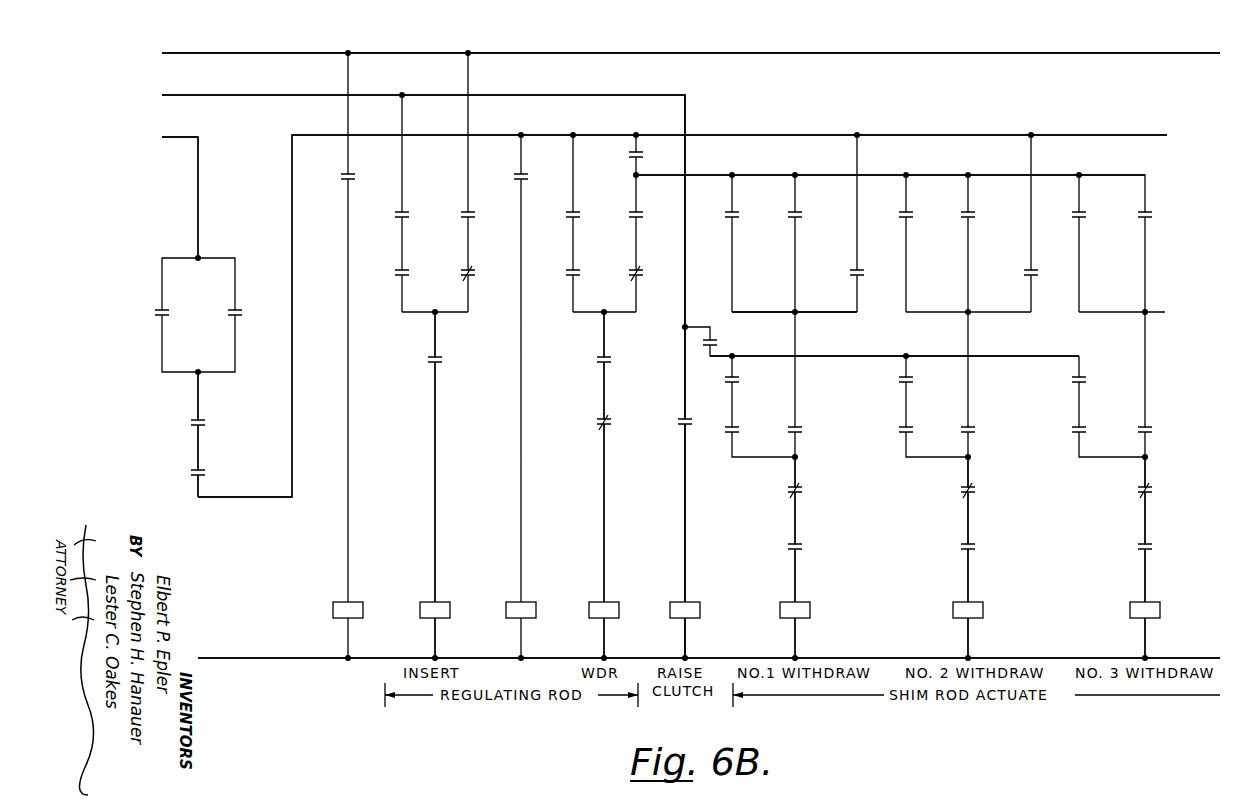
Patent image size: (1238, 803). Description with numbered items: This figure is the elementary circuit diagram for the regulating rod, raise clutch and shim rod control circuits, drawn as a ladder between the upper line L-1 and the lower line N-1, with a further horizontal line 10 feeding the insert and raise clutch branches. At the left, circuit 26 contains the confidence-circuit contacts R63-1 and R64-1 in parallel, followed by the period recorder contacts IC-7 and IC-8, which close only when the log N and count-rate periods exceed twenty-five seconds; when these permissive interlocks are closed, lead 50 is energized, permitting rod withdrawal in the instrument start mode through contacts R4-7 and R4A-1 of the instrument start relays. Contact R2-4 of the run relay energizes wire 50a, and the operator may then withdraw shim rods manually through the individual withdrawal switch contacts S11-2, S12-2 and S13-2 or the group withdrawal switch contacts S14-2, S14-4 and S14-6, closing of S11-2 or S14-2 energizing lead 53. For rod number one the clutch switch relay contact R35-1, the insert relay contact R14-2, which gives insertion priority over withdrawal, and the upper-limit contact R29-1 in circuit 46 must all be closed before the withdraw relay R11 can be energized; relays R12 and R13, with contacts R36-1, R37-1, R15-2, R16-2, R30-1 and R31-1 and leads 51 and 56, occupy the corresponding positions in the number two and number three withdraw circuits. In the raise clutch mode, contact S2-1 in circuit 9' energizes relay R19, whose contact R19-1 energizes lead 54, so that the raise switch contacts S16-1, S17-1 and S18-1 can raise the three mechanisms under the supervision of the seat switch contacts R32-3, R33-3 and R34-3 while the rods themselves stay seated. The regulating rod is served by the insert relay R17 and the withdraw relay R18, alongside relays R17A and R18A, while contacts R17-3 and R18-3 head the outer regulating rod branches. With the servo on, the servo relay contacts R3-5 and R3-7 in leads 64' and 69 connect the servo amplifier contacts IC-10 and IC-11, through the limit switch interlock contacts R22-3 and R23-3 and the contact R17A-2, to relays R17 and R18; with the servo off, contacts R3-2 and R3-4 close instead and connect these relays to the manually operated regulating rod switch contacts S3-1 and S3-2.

The power supply line L-1 is at (734, 53).
The neutral line N-1 is at (248, 658).
The period recorder 10 is at (238, 95).
The circuit 26 is at (165, 137).
The lead 50 is at (292, 198).
The wire 50a is at (772, 175).
The lead 53 is at (812, 313).
The lead 54 is at (862, 356).
The lead 64' is at (455, 485).
The lead 69 is at (604, 460).
The circuit 9' is at (698, 376).
The circuit 46 is at (795, 574).
The conductor 51 is at (968, 574).
The conductor 56 is at (1145, 574).
The relay contact R17-3 is at (370, 168).
The servo amplifier contact IC-10 is at (422, 206).
The regulating rod switch contact S3-1 is at (485, 206).
The servo relay contact R3-5 is at (420, 264).
The servo relay contact R3-2 is at (486, 267).
The relay contact R18-3 is at (543, 168).
The servo amplifier contact IC-11 is at (593, 206).
The regulating rod switch contact S3-2 is at (653, 206).
The servo relay contact R3-7 is at (591, 264).
The servo relay contact R3-4 is at (654, 267).
The run relay contact R2-4 is at (629, 158).
The individual withdrawal switch contact S11-2 is at (754, 206).
The group withdrawal switch contact S14-2 is at (817, 206).
The instrument start relay contact R4-7 is at (836, 263).
The individual withdrawal switch contact S12-2 is at (928, 206).
The group withdrawal switch contact S14-4 is at (990, 206).
The instrument start relay contact R4A-1 is at (1006, 263).
The individual withdrawal switch contact S13-2 is at (1101, 206).
The group withdrawal switch contact S14-6 is at (1167, 206).
The log N confidence relay contact R63-1 is at (131, 304).
The count-rate confidence relay contact R64-1 is at (207, 304).
The period recorder contact IC-7 is at (213, 414).
The period recorder contact IC-8 is at (213, 464).
The limit switch relay contact R22-3 is at (457, 351).
The limit switch relay contact R23-3 is at (626, 351).
The relay contact R17A-2 is at (631, 416).
The raise switch contact S2-1 is at (702, 413).
The raise clutch relay contact R19-1 is at (732, 334).
The raise switch contact S16-1 is at (754, 371).
The seat switch relay contact R32-3 is at (754, 421).
The clutch switch relay contact R35-1 is at (817, 421).
The raise switch contact S17-1 is at (928, 371).
The seat switch relay contact R33-3 is at (928, 421).
The clutch switch relay contact R36-1 is at (990, 421).
The raise switch contact S18-1 is at (1101, 371).
The seat switch relay contact R34-3 is at (1101, 421).
The clutch switch relay contact R37-1 is at (1167, 421).
The insert relay contact R14-2 is at (817, 484).
The relay contact (normally closed) R15-2 is at (990, 484).
The relay contact (normally closed) R16-2 is at (1167, 484).
The upper limit relay contact R29-1 is at (817, 538).
The relay contact R30-1 is at (990, 538).
The relay contact R31-1 is at (1167, 538).
The relay coil R17A is at (364, 600).
The insert relay R17 is at (446, 600).
The relay coil R18A is at (537, 600).
The withdraw relay R18 is at (615, 600).
The raise clutch relay R19 is at (696, 600).
The shim rod withdraw relay R11 is at (806, 600).
The relay coil R12 is at (979, 600).
The relay coil R13 is at (1156, 600).